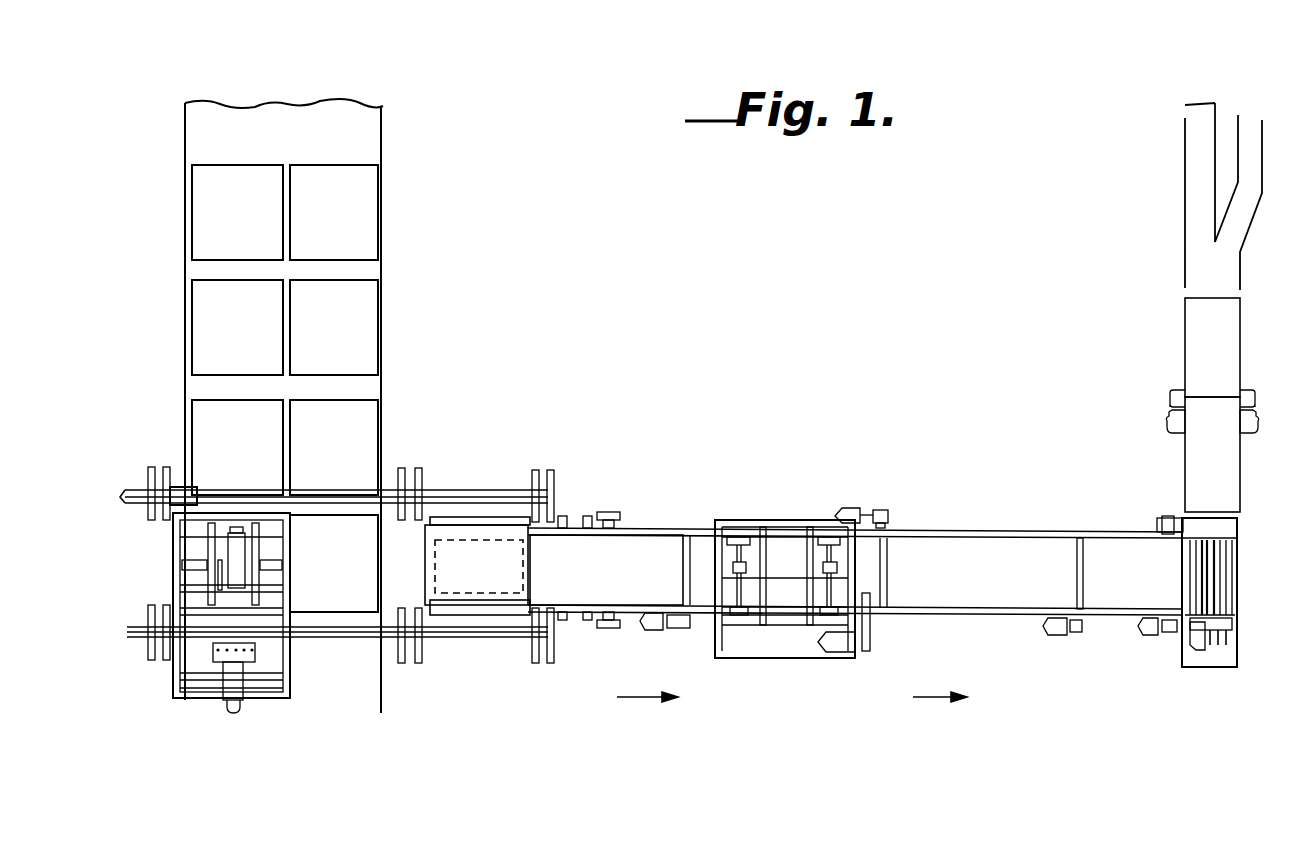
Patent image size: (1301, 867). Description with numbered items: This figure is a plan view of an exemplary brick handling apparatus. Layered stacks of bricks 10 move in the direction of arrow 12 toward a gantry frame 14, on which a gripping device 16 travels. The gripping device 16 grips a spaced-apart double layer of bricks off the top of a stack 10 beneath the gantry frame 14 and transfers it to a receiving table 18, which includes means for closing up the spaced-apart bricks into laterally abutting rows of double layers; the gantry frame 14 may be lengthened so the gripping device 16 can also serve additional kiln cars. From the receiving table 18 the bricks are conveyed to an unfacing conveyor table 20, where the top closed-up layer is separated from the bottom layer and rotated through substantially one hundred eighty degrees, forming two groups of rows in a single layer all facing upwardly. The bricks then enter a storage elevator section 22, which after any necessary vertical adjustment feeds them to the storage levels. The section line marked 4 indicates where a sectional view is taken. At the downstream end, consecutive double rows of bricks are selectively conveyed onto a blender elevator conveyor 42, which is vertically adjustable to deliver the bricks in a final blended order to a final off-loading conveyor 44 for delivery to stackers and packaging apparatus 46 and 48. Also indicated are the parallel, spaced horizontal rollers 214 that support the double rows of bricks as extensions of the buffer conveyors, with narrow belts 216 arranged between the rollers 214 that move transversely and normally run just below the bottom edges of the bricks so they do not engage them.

The section line indicator 4 is at (440, 330).
The layered stacks of bricks 10 is at (245, 228).
The arrow 12 is at (287, 134).
The gantry frame 14 is at (455, 490).
The gripping device 16 is at (303, 543).
The receiving table 18 is at (490, 586).
The unfacing conveyor table 20 is at (630, 590).
The storage elevator section 22 is at (792, 494).
The blender elevator conveyor 42 is at (1150, 475).
The final off-loading conveyor 44 is at (1153, 361).
The stackers and packaging apparatus 46 is at (1207, 104).
The stackers and packaging apparatus 48 is at (1265, 104).
The horizontal rollers 214 is at (1242, 592).
The narrow belts 216 is at (1198, 553).